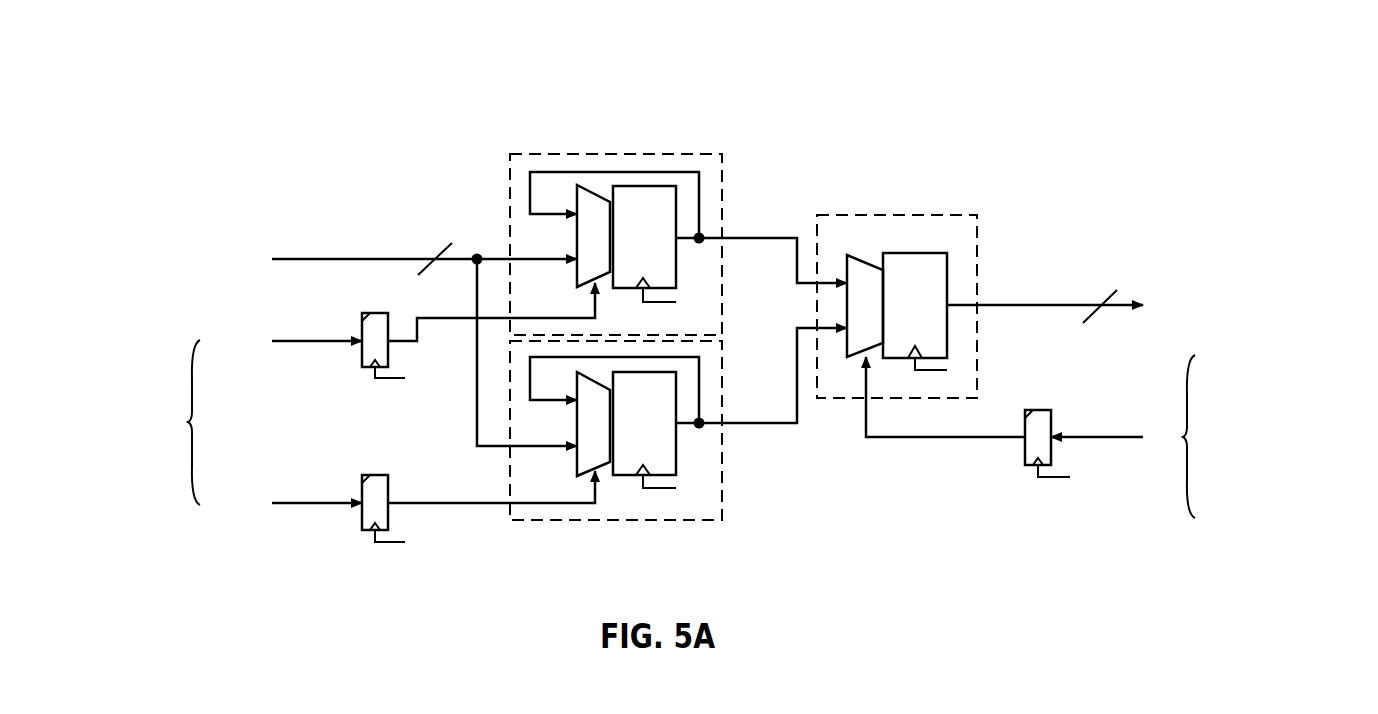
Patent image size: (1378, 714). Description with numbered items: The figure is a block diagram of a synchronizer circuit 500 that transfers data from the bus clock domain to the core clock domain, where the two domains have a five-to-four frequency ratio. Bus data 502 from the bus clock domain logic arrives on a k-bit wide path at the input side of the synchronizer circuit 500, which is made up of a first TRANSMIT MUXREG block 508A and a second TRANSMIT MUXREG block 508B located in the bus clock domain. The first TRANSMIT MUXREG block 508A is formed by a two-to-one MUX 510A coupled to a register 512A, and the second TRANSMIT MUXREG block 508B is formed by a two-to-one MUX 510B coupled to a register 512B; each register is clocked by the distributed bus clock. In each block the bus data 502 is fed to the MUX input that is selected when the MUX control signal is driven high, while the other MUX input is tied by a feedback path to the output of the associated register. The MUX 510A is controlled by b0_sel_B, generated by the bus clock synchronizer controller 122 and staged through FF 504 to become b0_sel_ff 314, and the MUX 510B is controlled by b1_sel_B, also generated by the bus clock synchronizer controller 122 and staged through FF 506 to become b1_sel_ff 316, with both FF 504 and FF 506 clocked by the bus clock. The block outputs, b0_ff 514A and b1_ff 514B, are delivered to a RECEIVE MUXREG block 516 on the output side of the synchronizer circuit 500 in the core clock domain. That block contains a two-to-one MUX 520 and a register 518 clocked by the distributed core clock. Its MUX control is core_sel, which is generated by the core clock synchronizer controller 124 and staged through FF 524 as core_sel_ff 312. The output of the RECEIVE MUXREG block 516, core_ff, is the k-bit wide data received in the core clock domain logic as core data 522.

The synchronizer circuit 500 is at (907, 86).
The bus data 502 is at (369, 325).
The FF 504 is at (311, 340).
The FF 506 is at (311, 504).
The b0_sel_ff 314 is at (491, 361).
The b1_sel_ff 316 is at (491, 535).
The first TRANSMIT MUXREG block 508A is at (675, 231).
The second TRANSMIT MUXREG block 508B is at (676, 443).
The 2:1 MUX 510A is at (557, 229).
The 2:1 MUX 510B is at (557, 429).
The register 512A is at (644, 263).
The register 512B is at (644, 449).
The b0_ff 514A is at (784, 231).
The b1_ff 514B is at (785, 405).
The RECEIVE MUXREG block 516 is at (949, 295).
The register 518 is at (915, 327).
The 2:1 MUX 520 is at (912, 267).
The core data 522 is at (1101, 318).
The FF 524 is at (1095, 454).
The core_sel_ff 312 is at (945, 427).
The bus clock synchronizer controller 122 is at (112, 434).
The core clock synchronizer controller 124 is at (1271, 448).